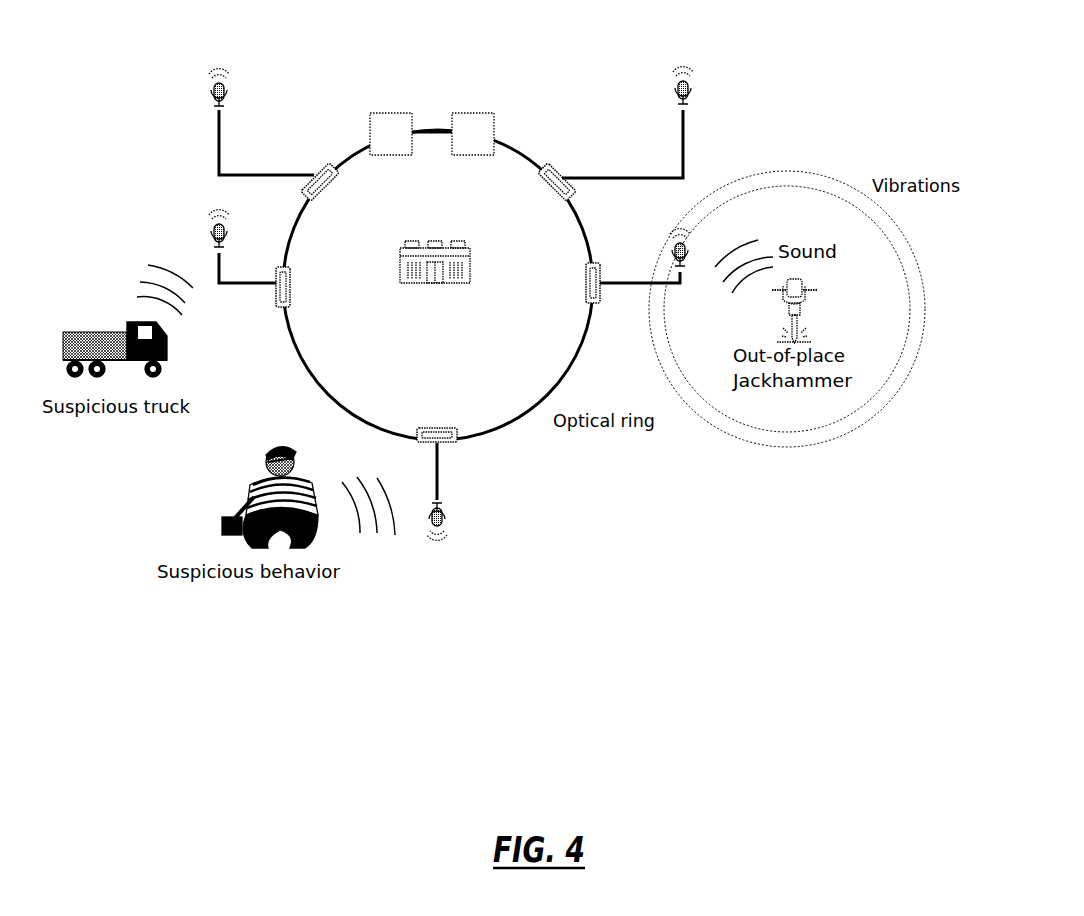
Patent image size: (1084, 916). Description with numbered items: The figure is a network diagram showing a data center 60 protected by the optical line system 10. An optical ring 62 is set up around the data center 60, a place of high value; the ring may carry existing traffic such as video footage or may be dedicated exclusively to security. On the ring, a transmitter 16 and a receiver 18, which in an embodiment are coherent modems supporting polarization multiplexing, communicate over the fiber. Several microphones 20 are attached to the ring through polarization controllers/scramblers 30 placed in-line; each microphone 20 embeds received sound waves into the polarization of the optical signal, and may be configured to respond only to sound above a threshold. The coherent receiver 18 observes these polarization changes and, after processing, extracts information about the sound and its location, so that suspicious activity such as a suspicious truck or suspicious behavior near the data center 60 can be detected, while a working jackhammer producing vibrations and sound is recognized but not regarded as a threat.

The optical line system 10 is at (566, 66).
The transmitter 16 is at (396, 90).
The receiver 18 is at (475, 90).
The microphone 20 is at (707, 78).
The polarization controller/scrambler 30 is at (552, 155).
The data center 60 is at (482, 272).
The optical ring 62 is at (605, 240).